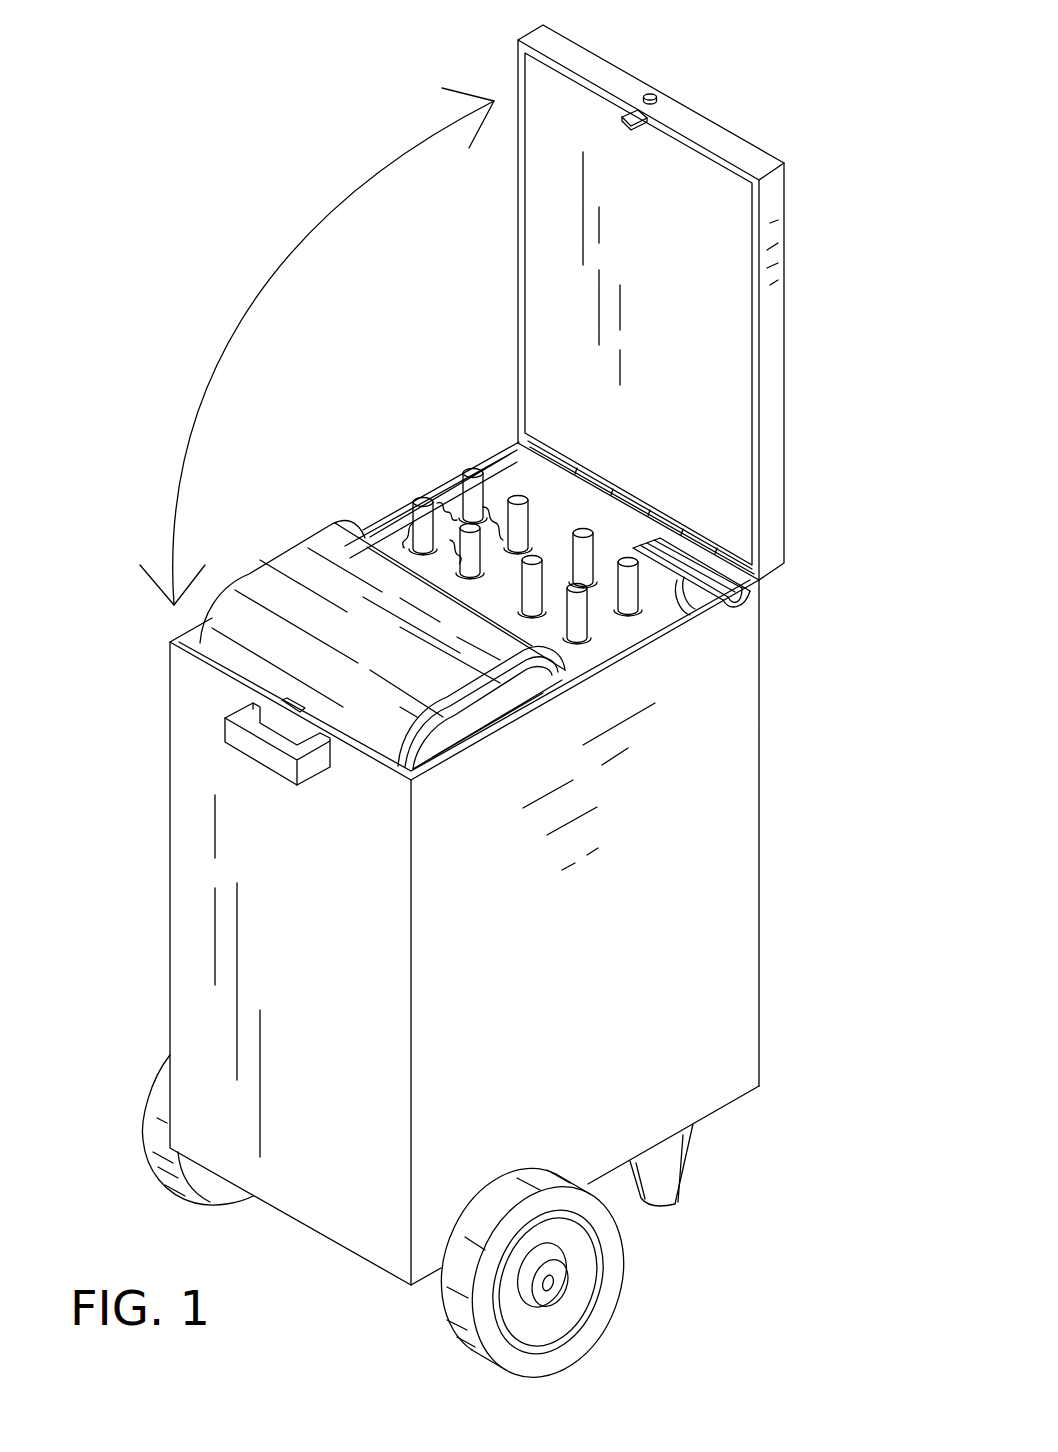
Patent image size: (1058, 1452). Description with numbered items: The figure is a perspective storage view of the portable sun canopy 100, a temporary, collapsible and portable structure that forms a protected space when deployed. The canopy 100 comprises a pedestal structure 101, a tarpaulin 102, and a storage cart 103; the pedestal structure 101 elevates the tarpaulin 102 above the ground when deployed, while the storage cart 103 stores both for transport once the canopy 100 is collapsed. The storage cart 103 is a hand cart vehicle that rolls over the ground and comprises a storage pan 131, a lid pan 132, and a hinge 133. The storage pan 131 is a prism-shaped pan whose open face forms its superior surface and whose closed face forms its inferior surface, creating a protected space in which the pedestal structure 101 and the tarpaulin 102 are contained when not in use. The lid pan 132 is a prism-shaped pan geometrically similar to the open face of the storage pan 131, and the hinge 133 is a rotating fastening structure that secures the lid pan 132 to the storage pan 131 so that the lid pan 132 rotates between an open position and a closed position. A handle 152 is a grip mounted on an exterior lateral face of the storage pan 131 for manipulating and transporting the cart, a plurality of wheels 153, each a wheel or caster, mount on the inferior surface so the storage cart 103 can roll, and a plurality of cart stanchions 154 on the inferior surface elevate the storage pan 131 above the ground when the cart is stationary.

The portable sun canopy 100 is at (186, 205).
The pedestal structure 101 is at (577, 622).
The tarpaulin 102 is at (275, 599).
The storage cart 103 is at (128, 819).
The storage pan 131 is at (693, 910).
The lid pan 132 is at (747, 163).
The hinge 133 is at (707, 548).
The handle 152 is at (300, 772).
The plurality of wheels 153 is at (607, 1300).
The plurality of cart stanchions 154 is at (662, 1177).